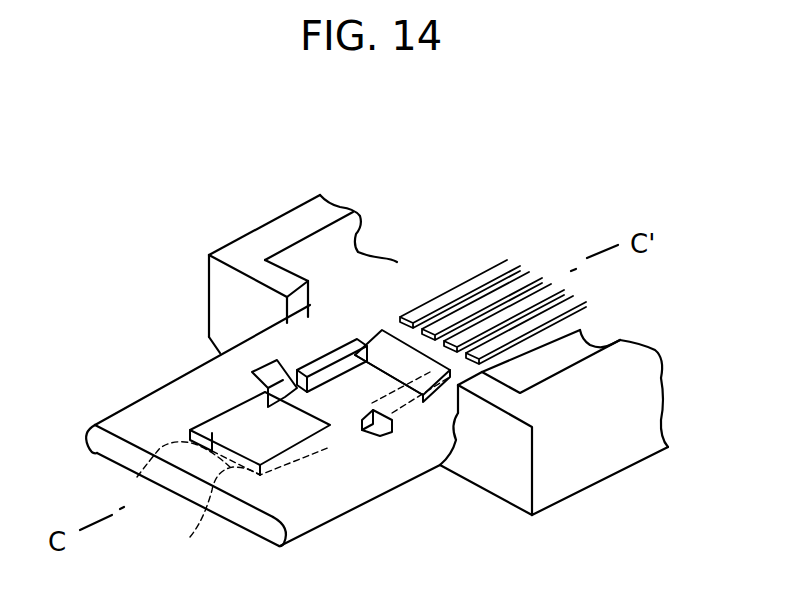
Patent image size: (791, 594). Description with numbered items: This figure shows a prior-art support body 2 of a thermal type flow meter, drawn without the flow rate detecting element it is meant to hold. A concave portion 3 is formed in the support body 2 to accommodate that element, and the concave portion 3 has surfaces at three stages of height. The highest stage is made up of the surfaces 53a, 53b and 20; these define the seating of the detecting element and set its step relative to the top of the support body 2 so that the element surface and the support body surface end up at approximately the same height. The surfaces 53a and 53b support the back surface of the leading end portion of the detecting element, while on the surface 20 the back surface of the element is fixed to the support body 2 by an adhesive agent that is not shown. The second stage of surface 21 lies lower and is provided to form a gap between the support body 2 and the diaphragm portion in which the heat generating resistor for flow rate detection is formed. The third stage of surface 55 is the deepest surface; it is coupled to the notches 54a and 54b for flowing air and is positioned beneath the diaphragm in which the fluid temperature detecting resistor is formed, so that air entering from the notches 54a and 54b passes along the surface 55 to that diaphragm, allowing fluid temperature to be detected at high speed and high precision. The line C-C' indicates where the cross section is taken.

The support body 2 is at (243, 433).
The concave portion 3 is at (160, 390).
The surface 20 is at (410, 372).
The second stage of surface 21 is at (284, 441).
The surface 53a is at (137, 477).
The surface 53b is at (198, 513).
The notch 54a is at (268, 363).
The notch 54b is at (396, 416).
The third stage of surface 55 is at (347, 393).